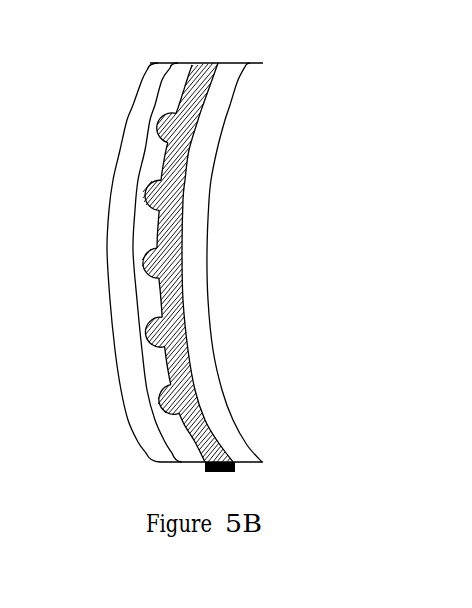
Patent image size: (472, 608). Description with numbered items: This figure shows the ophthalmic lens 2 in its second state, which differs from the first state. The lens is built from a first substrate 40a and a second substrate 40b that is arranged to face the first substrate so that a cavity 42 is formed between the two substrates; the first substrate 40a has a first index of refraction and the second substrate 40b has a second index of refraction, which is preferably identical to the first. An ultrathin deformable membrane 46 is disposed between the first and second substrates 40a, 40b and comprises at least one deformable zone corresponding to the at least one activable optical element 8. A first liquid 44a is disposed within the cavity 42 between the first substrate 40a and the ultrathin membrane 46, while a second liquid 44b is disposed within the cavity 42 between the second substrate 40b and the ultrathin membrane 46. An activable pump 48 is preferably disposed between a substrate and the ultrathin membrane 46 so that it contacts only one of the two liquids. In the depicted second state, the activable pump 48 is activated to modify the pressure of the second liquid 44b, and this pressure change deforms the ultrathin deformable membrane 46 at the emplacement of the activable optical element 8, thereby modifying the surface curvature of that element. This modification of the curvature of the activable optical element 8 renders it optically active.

The ophthalmic lens 2 is at (130, 98).
The activable optical element 8 is at (168, 259).
The first substrate 40a is at (168, 64).
The second substrate 40b is at (230, 74).
The cavity 42 is at (187, 165).
The first liquid 44a is at (150, 368).
The second liquid 44b is at (185, 407).
The ultrathin deformable membrane 46 is at (168, 298).
The activable pump 48 is at (230, 462).